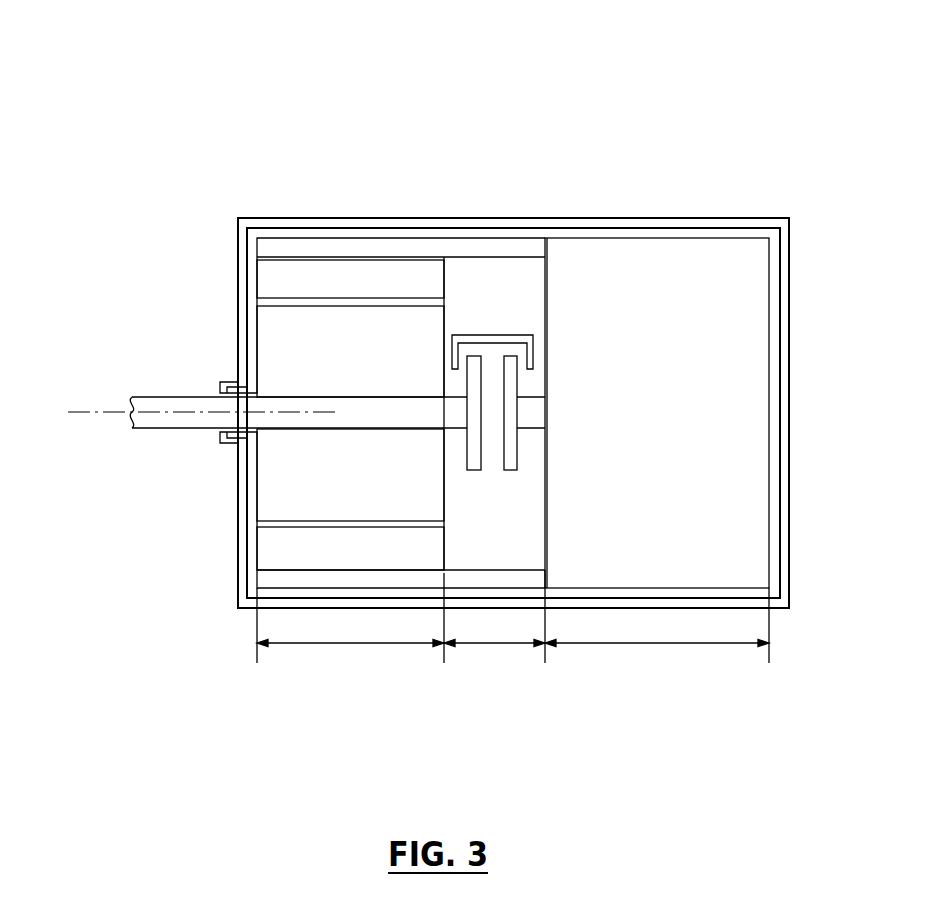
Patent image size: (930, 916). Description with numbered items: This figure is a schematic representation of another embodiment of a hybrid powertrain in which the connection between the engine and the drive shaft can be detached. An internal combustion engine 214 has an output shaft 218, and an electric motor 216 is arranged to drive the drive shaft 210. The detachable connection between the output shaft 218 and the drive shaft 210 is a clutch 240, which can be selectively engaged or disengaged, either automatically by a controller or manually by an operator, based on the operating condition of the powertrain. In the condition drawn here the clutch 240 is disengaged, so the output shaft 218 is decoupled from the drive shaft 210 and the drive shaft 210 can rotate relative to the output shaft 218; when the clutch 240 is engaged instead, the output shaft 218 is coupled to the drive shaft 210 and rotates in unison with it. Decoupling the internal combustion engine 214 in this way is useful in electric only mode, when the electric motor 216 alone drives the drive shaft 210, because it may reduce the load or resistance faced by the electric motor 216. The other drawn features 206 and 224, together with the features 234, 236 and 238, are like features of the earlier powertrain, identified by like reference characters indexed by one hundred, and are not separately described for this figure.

The electric motor 216 is at (288, 182).
The housing 206 is at (495, 218).
The internal combustion engine 214 is at (645, 238).
The clutch 240 is at (478, 334).
The output shaft 218 is at (525, 428).
The drive shaft 210 is at (145, 420).
The stator windings 224 is at (268, 493).
The first axial length 236 is at (339, 645).
The second axial length 238 is at (497, 645).
The third axial length 234 is at (660, 645).